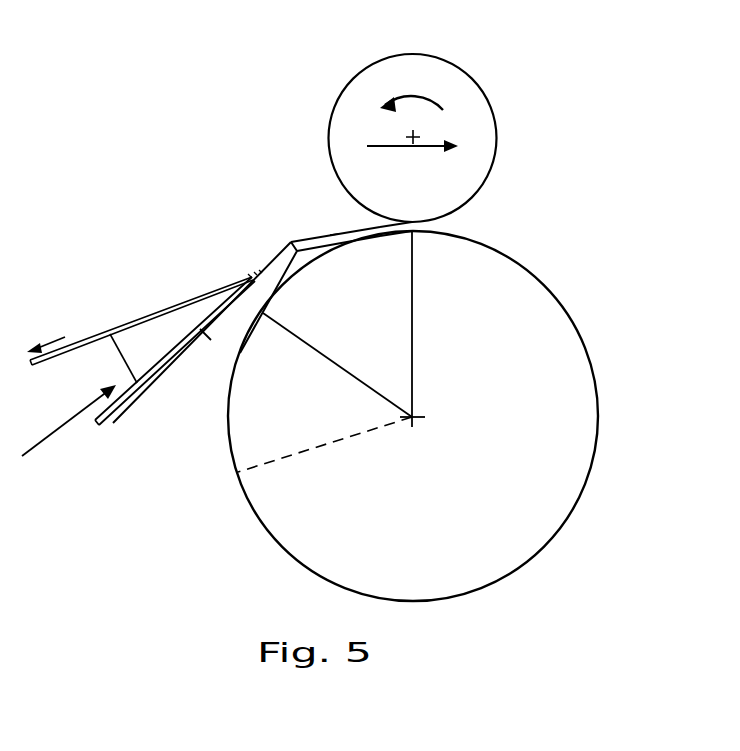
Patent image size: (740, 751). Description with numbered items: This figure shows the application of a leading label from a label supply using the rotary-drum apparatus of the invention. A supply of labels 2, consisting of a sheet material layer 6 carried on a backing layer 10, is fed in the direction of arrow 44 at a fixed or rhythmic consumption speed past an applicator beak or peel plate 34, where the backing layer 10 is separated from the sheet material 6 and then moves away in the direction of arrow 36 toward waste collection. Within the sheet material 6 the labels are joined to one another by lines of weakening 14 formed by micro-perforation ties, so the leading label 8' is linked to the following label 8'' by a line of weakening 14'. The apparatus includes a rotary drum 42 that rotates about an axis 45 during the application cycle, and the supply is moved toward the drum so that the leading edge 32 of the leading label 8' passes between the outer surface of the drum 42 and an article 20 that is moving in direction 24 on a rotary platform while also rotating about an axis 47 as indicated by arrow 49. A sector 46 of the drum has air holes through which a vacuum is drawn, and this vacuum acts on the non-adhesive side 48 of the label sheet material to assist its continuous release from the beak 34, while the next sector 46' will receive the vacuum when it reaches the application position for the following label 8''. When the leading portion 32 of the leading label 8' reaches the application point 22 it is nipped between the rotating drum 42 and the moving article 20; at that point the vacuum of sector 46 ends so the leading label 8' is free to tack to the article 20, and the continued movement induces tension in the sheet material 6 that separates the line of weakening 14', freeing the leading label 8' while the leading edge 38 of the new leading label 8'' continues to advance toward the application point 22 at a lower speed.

The supply of labels 2 is at (217, 332).
The sheet material layer 6 is at (255, 272).
The leading label 8' is at (317, 197).
The following label 8'' is at (213, 243).
The backing layer 10 is at (90, 341).
The line of weakening 14 is at (175, 360).
The line of weakening 14' is at (314, 205).
The article 20 is at (428, 88).
The application point 22 is at (410, 222).
The direction of movement of the article 24 is at (376, 145).
The leading edge 32 is at (440, 238).
The applicator beak 34 is at (148, 333).
The direction of backing layer movement 36 is at (46, 333).
The leading edge of the new leading label 38 is at (260, 270).
The rotary drum 42 is at (528, 430).
The direction of label feed 44 is at (50, 435).
The drum axis 45 is at (413, 418).
The drum sector 46 is at (519, 329).
The next drum sector 46' is at (277, 471).
The article rotation axis 47 is at (417, 134).
The non-adhesive side 48 is at (230, 325).
The arrow indicating article rotation 49 is at (410, 92).